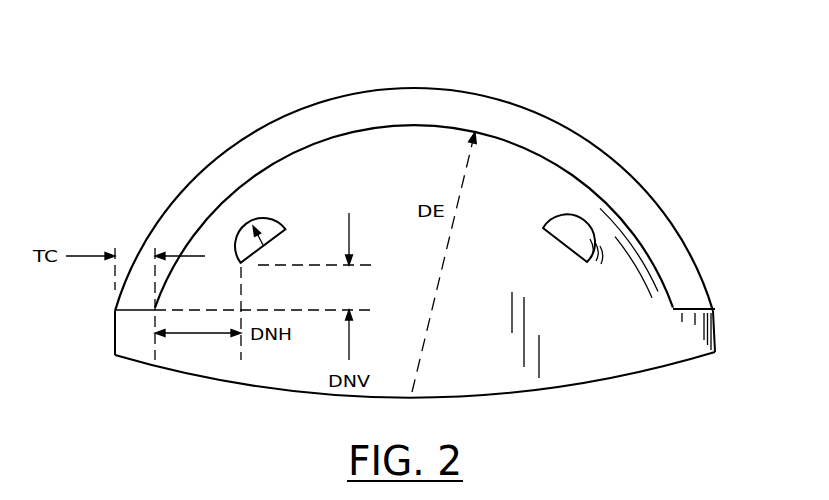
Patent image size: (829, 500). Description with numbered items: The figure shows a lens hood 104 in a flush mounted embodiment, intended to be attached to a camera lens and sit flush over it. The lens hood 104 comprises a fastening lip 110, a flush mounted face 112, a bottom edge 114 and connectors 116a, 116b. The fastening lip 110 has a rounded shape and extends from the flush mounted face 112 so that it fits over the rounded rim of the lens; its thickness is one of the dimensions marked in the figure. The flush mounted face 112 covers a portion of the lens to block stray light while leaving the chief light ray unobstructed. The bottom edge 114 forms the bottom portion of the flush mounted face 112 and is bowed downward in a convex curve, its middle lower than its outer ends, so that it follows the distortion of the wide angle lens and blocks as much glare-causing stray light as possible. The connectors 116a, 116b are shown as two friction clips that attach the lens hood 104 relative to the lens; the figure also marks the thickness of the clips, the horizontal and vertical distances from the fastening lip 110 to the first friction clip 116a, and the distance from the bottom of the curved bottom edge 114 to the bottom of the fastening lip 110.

The lens hood 104 is at (270, 37).
The fastening lip 110 is at (310, 107).
The flush mounted face 112 is at (718, 328).
The bottom edge 114 is at (574, 389).
The connector 116a is at (278, 221).
The connector 116b is at (556, 223).